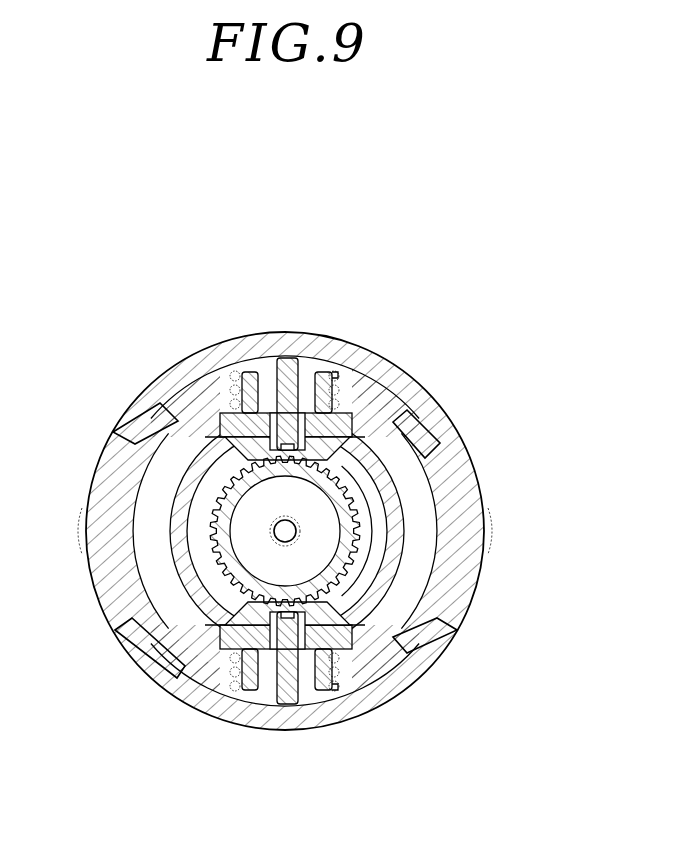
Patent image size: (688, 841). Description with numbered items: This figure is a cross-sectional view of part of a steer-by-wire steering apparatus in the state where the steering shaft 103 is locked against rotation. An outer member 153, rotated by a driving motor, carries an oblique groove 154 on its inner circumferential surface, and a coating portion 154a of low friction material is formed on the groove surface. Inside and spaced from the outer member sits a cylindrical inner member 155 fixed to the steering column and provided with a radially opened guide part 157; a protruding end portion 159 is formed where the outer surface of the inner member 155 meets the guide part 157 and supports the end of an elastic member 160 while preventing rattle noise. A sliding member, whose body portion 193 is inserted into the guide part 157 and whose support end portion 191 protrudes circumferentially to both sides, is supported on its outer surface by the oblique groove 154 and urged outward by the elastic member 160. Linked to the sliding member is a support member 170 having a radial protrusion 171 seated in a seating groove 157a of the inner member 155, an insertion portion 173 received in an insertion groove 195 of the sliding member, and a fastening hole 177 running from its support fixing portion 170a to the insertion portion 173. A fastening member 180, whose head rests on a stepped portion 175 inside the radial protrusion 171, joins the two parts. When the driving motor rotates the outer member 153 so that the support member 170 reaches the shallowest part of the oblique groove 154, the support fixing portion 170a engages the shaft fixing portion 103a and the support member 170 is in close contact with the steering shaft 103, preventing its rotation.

The steering shaft 103 is at (430, 462).
The shaft fixing portion 103a is at (362, 550).
The outer member 153 is at (155, 390).
The oblique groove 154 is at (188, 690).
The coating portion 154a is at (213, 680).
The inner member 155 is at (178, 535).
The guide part 157 is at (347, 392).
The seating groove 157a is at (225, 430).
The protruding end portion 159 is at (390, 398).
The elastic member 160 is at (233, 380).
The support member 170 is at (437, 653).
The support fixing portion 170a is at (407, 683).
The radial protrusion 171 is at (262, 612).
The insertion portion 173 is at (243, 630).
The stepped portion 175 is at (258, 618).
The fastening hole 177 is at (337, 693).
The fastening member 180 is at (283, 693).
The support end portion 191 is at (305, 357).
The body portion 193 is at (240, 385).
The insertion groove 195 is at (350, 392).